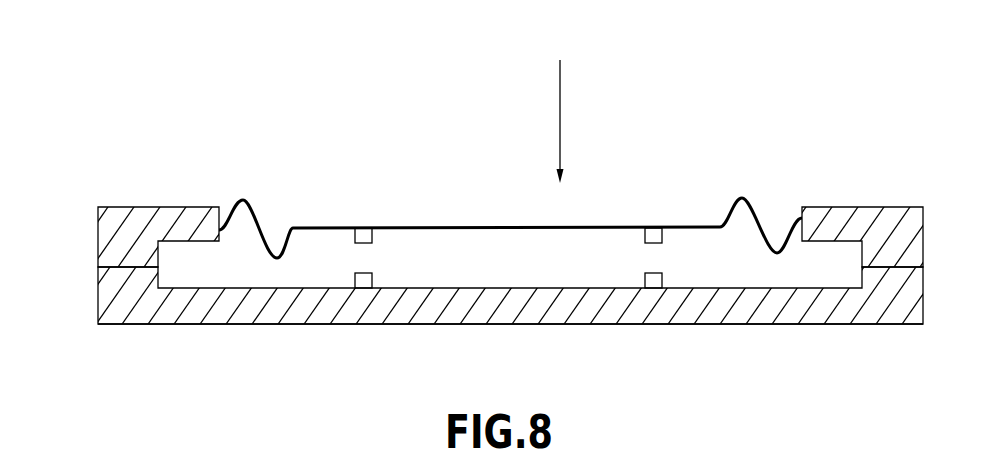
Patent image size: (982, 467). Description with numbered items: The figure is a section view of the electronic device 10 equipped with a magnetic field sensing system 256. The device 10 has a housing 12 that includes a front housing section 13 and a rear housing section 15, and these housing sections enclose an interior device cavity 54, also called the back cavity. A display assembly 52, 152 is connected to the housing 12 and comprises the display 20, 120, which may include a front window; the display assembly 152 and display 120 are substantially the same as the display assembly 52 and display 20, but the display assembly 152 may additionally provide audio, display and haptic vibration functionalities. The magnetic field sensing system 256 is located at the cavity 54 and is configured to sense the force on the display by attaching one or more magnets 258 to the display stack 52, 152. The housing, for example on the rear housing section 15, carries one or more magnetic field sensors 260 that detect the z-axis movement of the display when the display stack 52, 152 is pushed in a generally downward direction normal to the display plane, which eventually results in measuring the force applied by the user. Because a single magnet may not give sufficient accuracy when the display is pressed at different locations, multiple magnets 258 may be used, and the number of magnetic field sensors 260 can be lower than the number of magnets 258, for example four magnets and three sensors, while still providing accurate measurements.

The device 10 is at (800, 48).
The housing 12 is at (100, 267).
The front housing section 13 is at (110, 206).
The rear housing section 15 is at (883, 325).
The interior device cavity 54 is at (308, 265).
The display 20 is at (510, 211).
The display 120 is at (512, 216).
The display assembly 52 is at (640, 121).
The display assembly 152 is at (596, 171).
The magnetic field sensing system 256 is at (536, 276).
The magnets 258 is at (353, 230).
The magnetic field sensors 260 is at (353, 280).